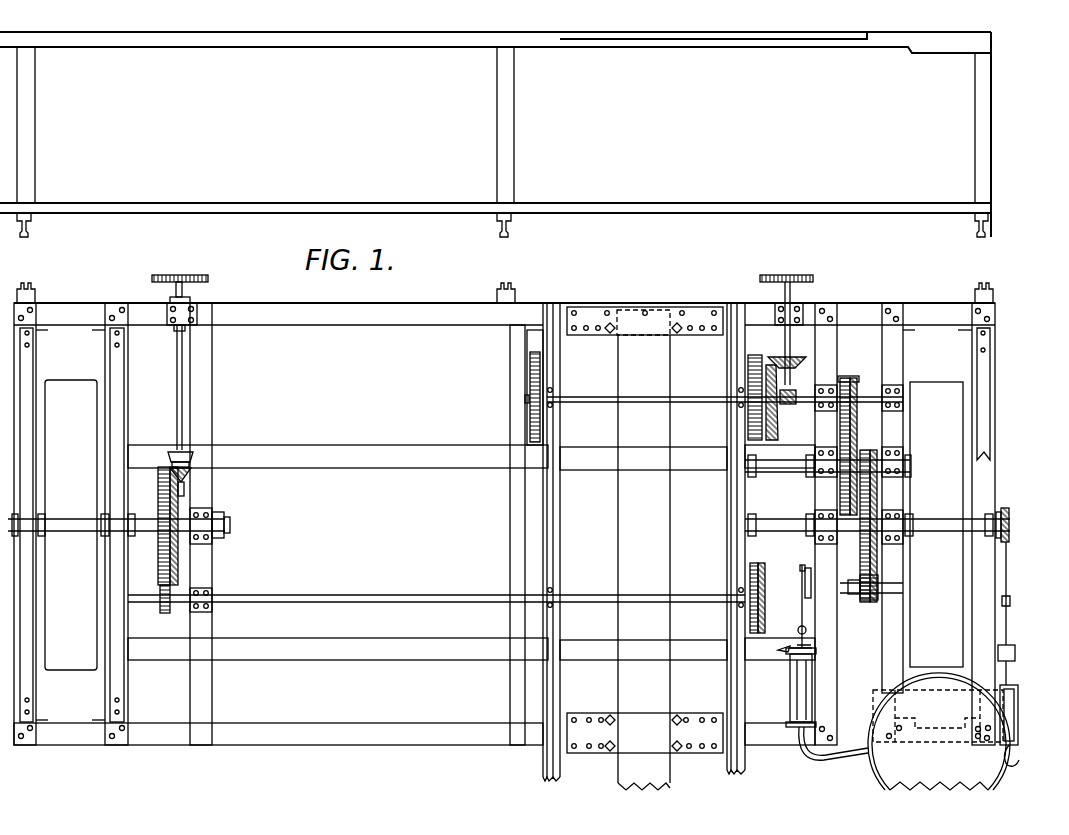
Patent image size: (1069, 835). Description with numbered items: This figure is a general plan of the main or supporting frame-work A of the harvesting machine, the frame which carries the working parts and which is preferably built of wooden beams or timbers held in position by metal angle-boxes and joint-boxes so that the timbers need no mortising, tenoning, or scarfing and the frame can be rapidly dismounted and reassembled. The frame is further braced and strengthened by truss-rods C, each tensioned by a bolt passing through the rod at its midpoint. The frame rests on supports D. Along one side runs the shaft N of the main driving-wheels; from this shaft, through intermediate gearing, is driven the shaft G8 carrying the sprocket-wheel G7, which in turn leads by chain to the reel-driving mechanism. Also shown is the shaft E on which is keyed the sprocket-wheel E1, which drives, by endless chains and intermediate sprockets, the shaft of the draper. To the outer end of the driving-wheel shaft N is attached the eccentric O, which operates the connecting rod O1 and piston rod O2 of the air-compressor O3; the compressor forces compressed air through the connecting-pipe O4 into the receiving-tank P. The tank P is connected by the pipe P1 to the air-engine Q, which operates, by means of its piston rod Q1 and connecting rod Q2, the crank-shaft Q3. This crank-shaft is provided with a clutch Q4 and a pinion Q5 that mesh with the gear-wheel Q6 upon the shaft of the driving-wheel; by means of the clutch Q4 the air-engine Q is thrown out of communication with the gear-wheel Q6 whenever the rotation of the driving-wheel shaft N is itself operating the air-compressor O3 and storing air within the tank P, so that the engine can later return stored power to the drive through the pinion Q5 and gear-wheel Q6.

The main frame-work A is at (370, 322).
The truss-rod C is at (1002, 380).
The supporting feet D is at (38, 218).
The shaft of the main driving-wheels N is at (230, 523).
The sprocket-wheel G7 is at (170, 275).
The shaft G8 is at (177, 360).
The sprocket-wheel E1 is at (788, 278).
The shaft E is at (786, 338).
The eccentric O is at (1006, 508).
The connecting rod O1 is at (1007, 578).
The piston rod O2 is at (1011, 636).
The air-compressor O3 is at (1010, 687).
The connecting-pipe O4 is at (1011, 766).
The air-engine Q is at (795, 705).
The piston rod Q1 is at (800, 631).
The connecting rod Q2 is at (801, 598).
The crank-shaft Q3 is at (857, 594).
The clutch Q4 is at (855, 589).
The pinion Q5 is at (870, 603).
The gear-wheel Q6 is at (846, 541).
The receiving-tank P is at (939, 731).
The pipe P1 is at (832, 760).